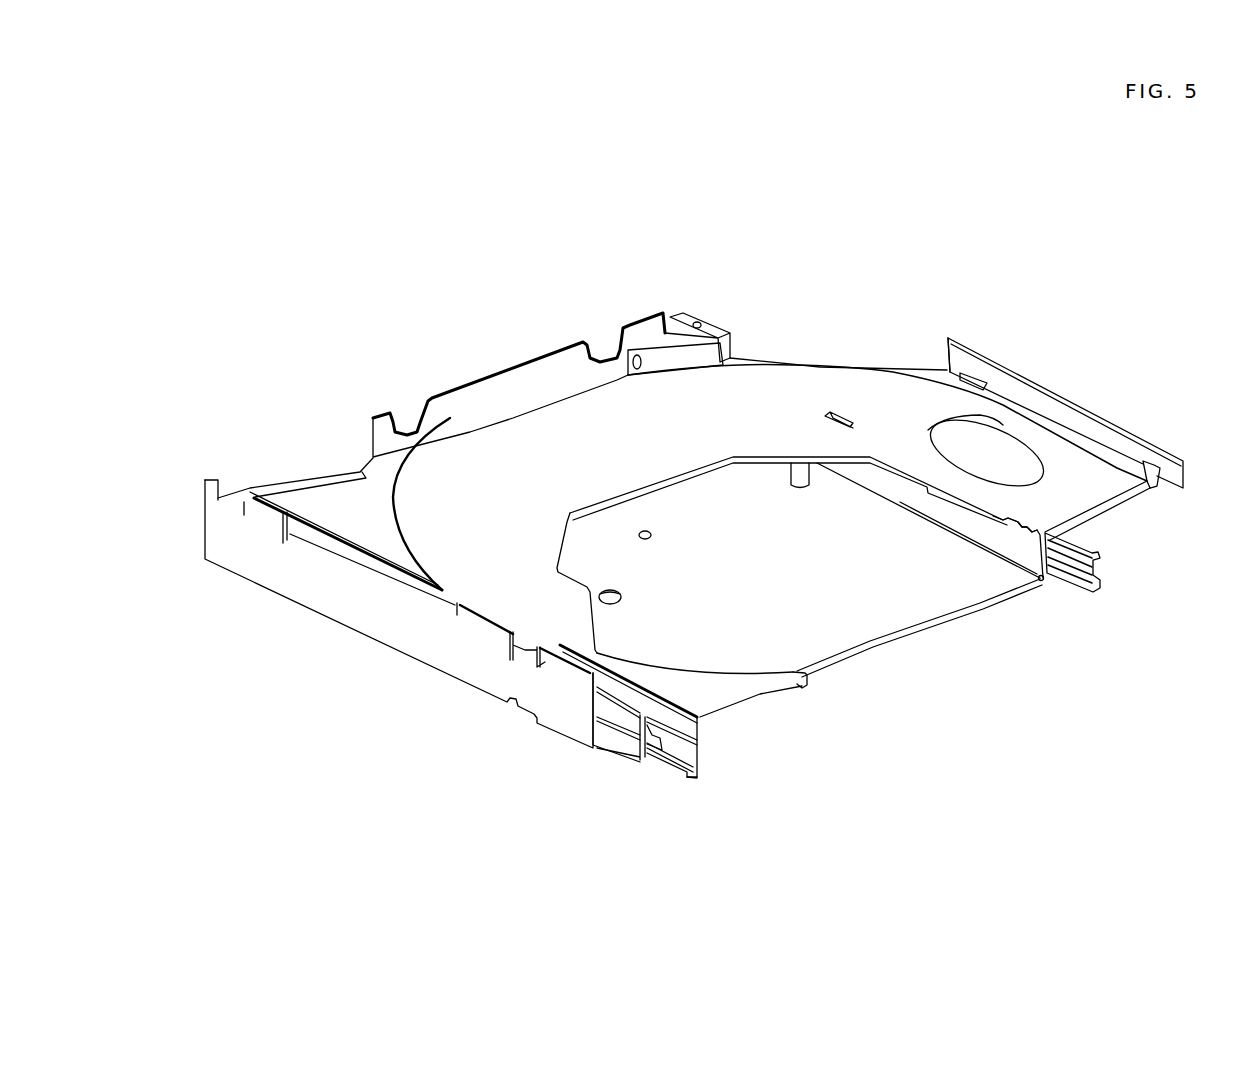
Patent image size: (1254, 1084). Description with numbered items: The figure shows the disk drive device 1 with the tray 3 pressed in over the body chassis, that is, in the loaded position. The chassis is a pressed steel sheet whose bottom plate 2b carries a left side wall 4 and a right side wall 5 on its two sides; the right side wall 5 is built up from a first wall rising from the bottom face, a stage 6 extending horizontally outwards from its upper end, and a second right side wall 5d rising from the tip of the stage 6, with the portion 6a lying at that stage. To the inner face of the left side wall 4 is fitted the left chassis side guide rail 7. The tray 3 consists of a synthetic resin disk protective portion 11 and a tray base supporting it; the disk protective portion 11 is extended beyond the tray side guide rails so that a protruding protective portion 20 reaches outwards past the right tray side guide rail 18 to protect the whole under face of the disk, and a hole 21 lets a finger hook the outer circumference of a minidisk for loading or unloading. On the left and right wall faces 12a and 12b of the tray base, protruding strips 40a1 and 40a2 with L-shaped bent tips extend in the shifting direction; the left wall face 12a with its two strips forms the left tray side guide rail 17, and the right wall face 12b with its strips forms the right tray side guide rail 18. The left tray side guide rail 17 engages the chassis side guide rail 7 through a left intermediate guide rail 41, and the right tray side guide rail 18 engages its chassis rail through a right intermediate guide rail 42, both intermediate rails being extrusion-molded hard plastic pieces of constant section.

The disk drive device 1 is at (604, 204).
The bottom plate 2b is at (893, 622).
The tray 3 is at (495, 455).
The left side wall 4 is at (293, 587).
The right side wall 5 is at (1142, 421).
The second right side wall 5d is at (992, 357).
The stage 6 is at (1153, 513).
The flange 6a is at (1112, 513).
The chassis side guide rail 7 is at (237, 492).
The disk protective portion 11 is at (460, 507).
The left wall face 12a is at (678, 778).
The right wall face 12b is at (987, 537).
The left tray side guide rail 17 is at (714, 763).
The right tray side guide rail 18 is at (1041, 578).
The protruding protective portion 20 is at (918, 397).
The hole 21 is at (1000, 433).
The protruding strip 40a1 is at (660, 737).
The protruding strip 40a2 is at (678, 768).
The left intermediate guide rail 41 is at (632, 770).
The right intermediate guide rail 42 is at (1106, 606).